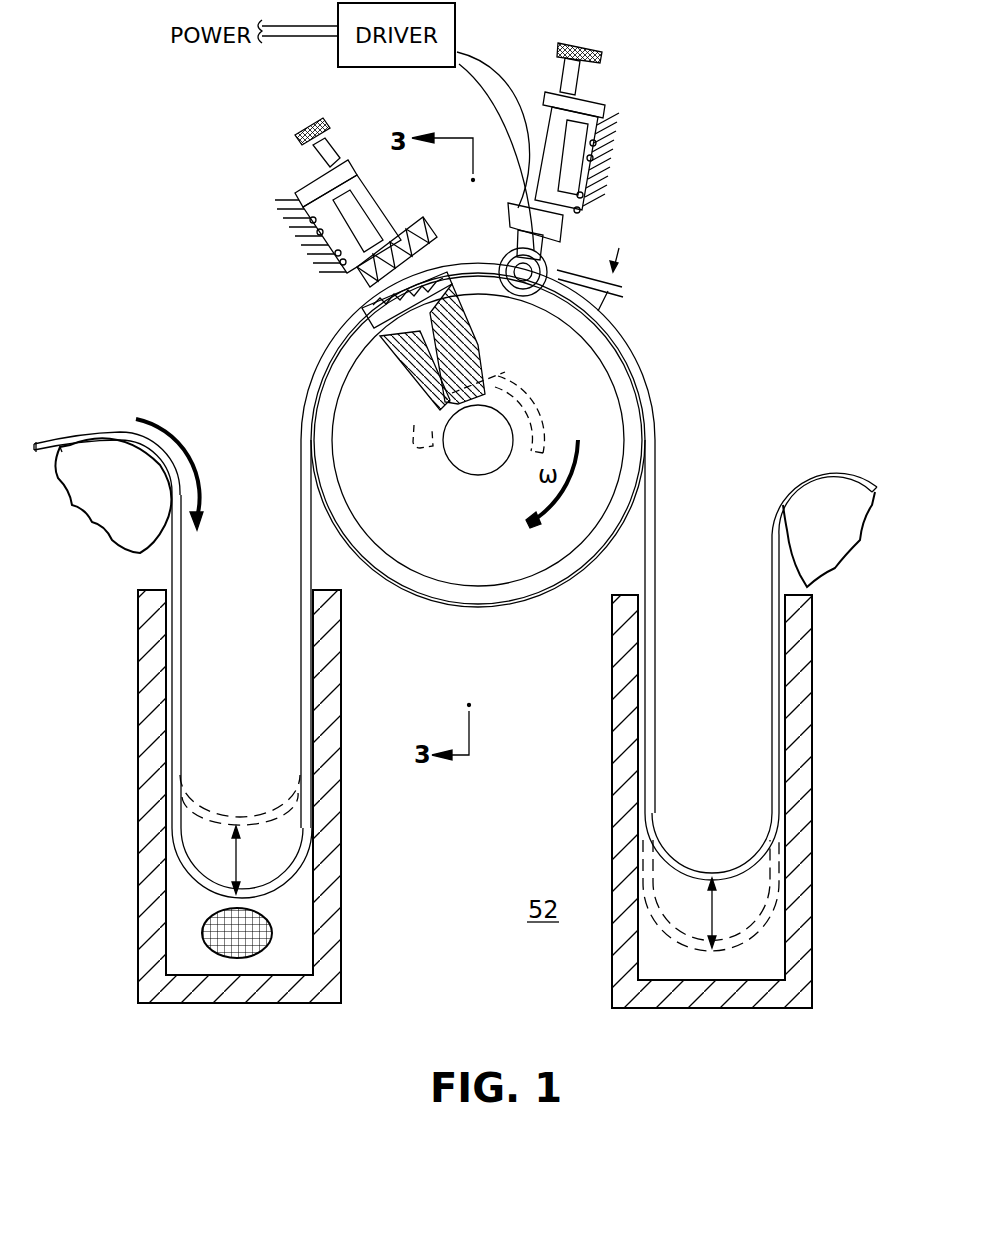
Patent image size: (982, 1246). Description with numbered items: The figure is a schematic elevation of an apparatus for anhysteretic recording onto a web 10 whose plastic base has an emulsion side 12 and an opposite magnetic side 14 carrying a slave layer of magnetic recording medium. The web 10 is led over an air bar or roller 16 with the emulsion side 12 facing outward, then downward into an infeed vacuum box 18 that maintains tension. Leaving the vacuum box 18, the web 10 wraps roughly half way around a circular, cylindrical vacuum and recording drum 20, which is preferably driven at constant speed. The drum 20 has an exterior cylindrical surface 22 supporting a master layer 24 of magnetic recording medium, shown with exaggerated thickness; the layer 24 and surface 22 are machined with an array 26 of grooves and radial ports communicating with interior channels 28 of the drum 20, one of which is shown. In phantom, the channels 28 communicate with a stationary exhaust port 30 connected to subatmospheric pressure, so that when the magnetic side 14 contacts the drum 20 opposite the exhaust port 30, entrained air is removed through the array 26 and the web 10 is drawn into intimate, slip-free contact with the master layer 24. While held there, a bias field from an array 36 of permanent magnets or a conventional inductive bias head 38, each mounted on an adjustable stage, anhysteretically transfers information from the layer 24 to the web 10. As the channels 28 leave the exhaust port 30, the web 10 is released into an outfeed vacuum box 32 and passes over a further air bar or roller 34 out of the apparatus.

The web 10 is at (43, 440).
The emulsion side 12 is at (75, 433).
The magnetic side 14 is at (58, 452).
The air bar or roller 16 is at (118, 522).
The infeed vacuum box 18 is at (140, 653).
The vacuum and recording drum 20 is at (478, 567).
The exterior cylindrical surface 22 is at (546, 596).
The master layer 24 is at (430, 603).
The array of grooves and ports 26 is at (368, 300).
The interior channels 28 is at (433, 372).
The exhaust port 30 is at (512, 372).
The outfeed vacuum box 32 is at (800, 667).
The air bar or roller 34 is at (795, 530).
The array of permanent bias magnets 36 is at (442, 232).
The inductive bias head 38 is at (553, 252).